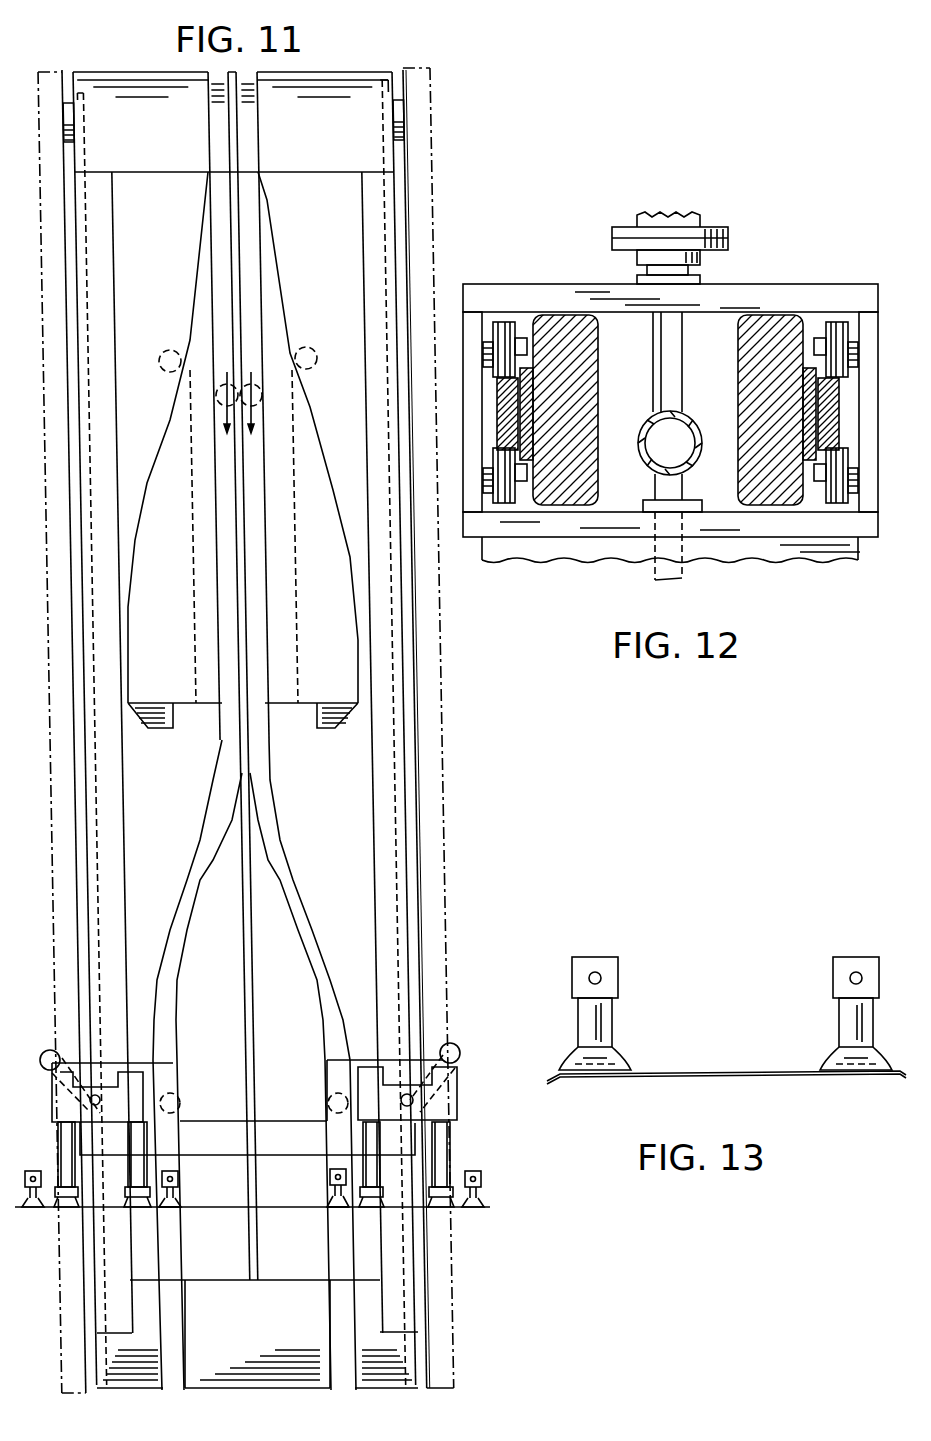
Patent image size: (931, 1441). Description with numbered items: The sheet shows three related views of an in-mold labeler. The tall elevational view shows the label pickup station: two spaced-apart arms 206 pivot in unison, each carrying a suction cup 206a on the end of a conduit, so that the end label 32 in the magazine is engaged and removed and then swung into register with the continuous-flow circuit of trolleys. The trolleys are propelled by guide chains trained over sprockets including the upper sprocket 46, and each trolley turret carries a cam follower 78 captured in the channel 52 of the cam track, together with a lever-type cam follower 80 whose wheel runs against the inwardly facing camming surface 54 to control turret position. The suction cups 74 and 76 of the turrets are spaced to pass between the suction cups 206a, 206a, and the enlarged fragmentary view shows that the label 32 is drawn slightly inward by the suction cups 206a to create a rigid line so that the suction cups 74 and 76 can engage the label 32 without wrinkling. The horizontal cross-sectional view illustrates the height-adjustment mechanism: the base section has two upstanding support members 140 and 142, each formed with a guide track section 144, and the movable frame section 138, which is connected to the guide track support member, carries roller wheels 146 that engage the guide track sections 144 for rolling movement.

In FIG. 11, the upper sprocket 46 is at (423, 100).
In FIG. 11, the channel 52 is at (242, 227).
In FIG. 11, the camming surface 54 is at (285, 322).
In FIG. 11, the cam follower 78 is at (260, 397).
In FIG. 11, the cam follower 80 is at (338, 370).
In FIG. 11, the suction cup 74 is at (66, 1206).
In FIG. 11, the suction cup 76 is at (145, 1206).
In FIG. 11, the arm 206 is at (34, 1170).
In FIG. 13, the arm 206 is at (591, 960).
In FIG. 11, the suction cup 206a is at (182, 1203).
In FIG. 13, the suction cup 206a is at (615, 1053).
In FIG. 11, the label 32 is at (92, 1208).
In FIG. 13, the label 32 is at (721, 1076).
In FIG. 12, the movable frame section 138 is at (766, 290).
In FIG. 12, the upstanding support member 140 is at (556, 318).
In FIG. 12, the upstanding support member 142 is at (782, 320).
In FIG. 12, the guide track section 144 is at (508, 416).
In FIG. 12, the roller wheel 146 is at (503, 324).